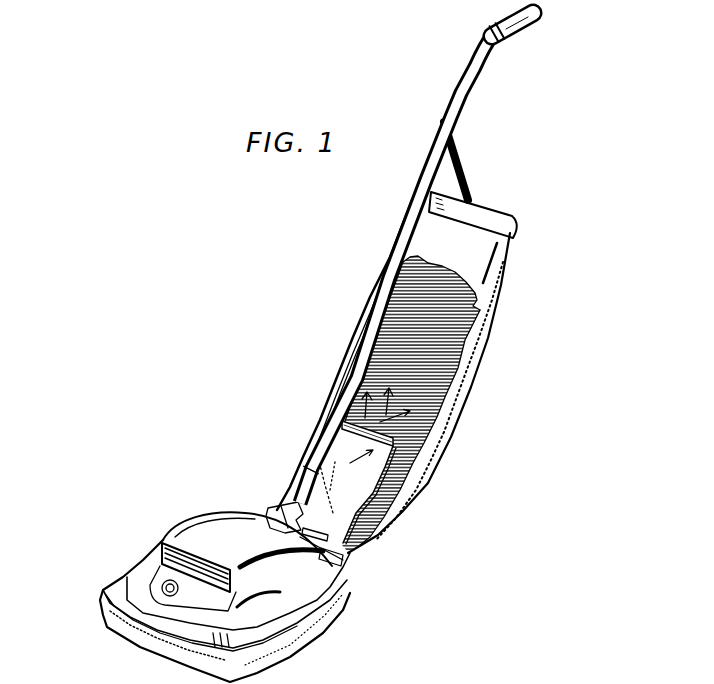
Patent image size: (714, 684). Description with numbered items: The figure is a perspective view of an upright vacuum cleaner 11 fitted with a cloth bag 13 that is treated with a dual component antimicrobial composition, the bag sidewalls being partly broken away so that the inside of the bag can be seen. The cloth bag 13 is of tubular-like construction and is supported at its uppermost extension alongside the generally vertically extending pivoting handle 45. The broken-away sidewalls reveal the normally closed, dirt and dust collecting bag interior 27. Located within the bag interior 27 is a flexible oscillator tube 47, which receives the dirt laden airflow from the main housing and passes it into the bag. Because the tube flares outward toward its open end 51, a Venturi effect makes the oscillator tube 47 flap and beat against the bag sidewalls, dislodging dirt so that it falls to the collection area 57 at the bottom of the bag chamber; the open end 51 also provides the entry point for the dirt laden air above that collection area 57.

The upright vacuum cleaner 11 is at (210, 481).
The cloth bag 13 is at (502, 284).
The bag interior 27 is at (458, 348).
The pivoting handle 45 is at (473, 78).
The oscillator tube 47 is at (342, 505).
The open end 51 is at (433, 427).
The collection area 57 is at (363, 530).